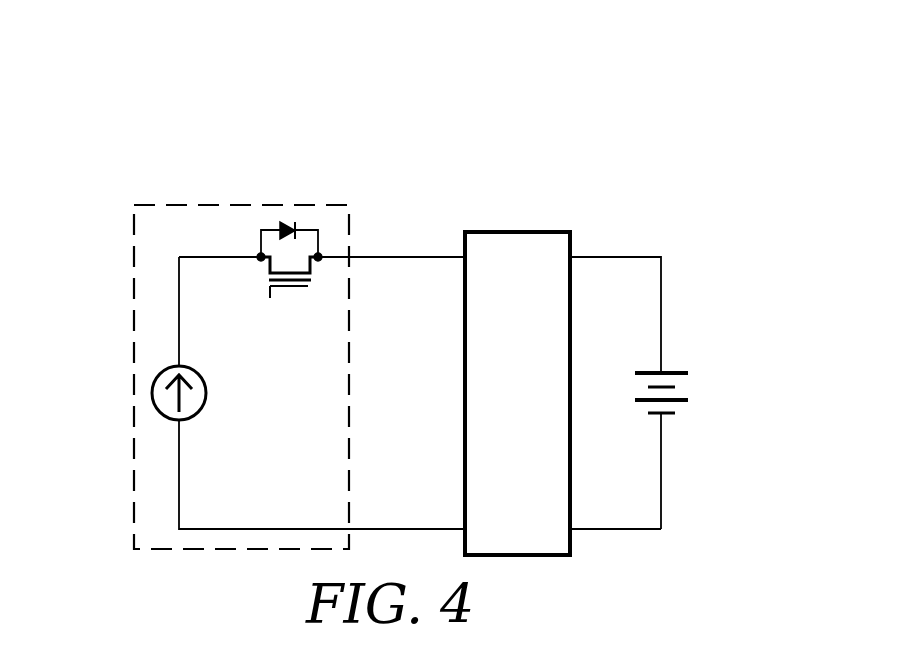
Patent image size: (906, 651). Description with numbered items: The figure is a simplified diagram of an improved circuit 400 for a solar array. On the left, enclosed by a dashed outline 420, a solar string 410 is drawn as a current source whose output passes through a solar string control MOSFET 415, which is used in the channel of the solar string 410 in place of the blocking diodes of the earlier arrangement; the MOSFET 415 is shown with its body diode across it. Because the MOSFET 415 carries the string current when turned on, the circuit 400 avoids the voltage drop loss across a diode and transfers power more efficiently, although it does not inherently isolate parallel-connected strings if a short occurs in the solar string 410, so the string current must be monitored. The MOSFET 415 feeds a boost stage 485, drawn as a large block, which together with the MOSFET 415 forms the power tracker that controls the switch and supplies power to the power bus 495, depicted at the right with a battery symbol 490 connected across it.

The improved circuit 400 is at (398, 163).
The solar string 410 is at (155, 374).
The solar string control MOSFET 415 is at (303, 287).
The power supply module 420 is at (176, 205).
The boost stage 485 is at (541, 400).
The battery 490 is at (677, 380).
The power bus 495 is at (645, 257).